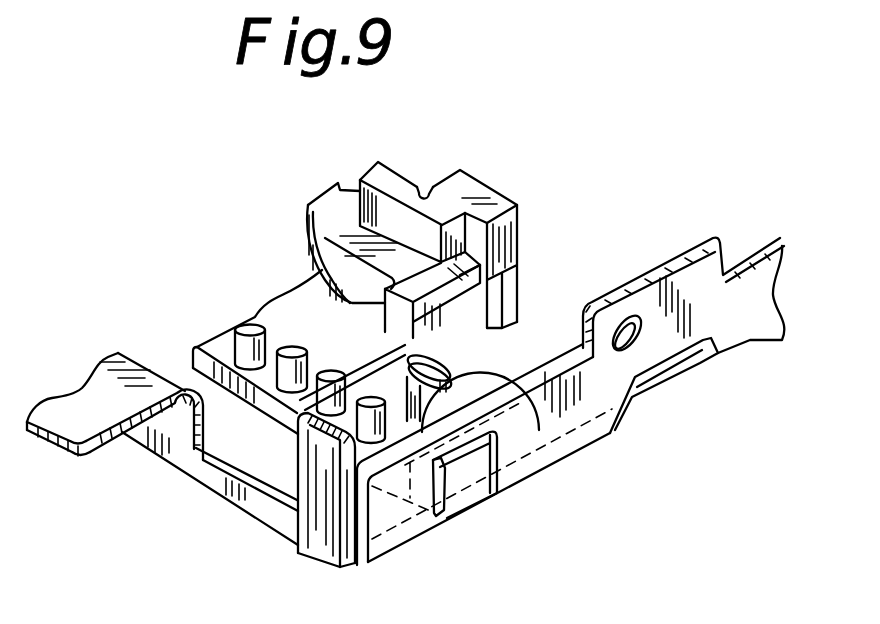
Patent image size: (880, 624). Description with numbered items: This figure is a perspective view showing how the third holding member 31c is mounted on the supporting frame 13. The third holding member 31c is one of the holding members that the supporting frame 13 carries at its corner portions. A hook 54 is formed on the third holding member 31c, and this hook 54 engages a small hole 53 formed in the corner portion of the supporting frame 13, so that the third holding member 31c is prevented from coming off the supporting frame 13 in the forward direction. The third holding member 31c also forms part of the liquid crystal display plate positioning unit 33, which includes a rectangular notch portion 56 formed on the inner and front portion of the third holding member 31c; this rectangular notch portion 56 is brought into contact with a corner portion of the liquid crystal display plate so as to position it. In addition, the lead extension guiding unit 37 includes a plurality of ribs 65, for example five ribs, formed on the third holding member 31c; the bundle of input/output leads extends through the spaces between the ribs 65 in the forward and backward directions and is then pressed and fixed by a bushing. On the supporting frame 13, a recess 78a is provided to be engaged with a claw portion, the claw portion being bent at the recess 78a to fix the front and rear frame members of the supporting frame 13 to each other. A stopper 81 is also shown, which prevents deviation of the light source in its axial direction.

The supporting frame 13 is at (305, 527).
The lead extension guiding unit 37 is at (162, 283).
The liquid crystal display plate positioning unit 33 is at (475, 91).
The ribs 65 is at (250, 326).
The third holding member 31c is at (470, 188).
The rectangular notch portion 56 is at (425, 186).
The stopper 81 is at (539, 430).
The hook 54 is at (460, 480).
The small hole 53 is at (435, 515).
The recesses 78a is at (697, 366).